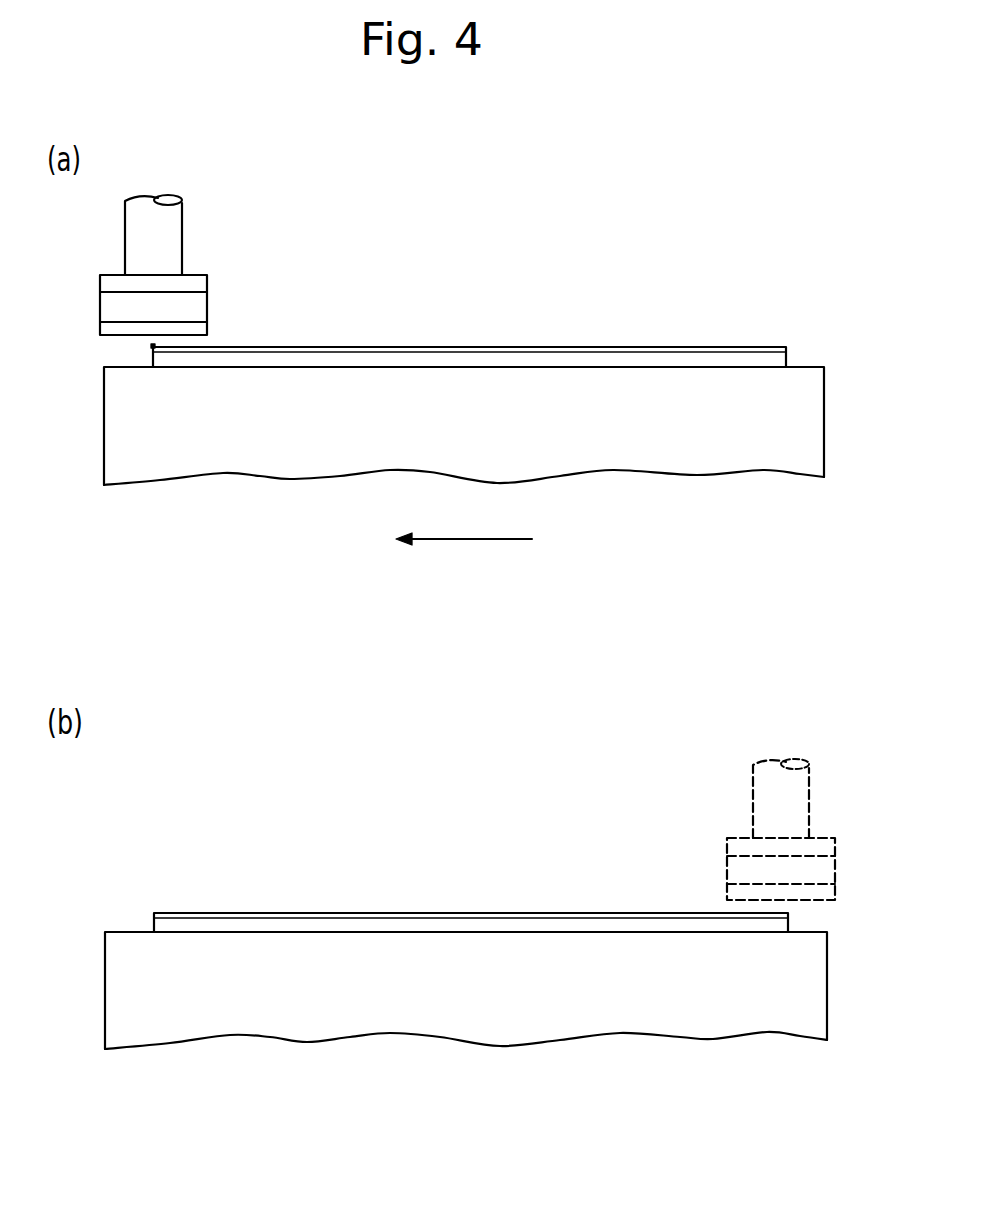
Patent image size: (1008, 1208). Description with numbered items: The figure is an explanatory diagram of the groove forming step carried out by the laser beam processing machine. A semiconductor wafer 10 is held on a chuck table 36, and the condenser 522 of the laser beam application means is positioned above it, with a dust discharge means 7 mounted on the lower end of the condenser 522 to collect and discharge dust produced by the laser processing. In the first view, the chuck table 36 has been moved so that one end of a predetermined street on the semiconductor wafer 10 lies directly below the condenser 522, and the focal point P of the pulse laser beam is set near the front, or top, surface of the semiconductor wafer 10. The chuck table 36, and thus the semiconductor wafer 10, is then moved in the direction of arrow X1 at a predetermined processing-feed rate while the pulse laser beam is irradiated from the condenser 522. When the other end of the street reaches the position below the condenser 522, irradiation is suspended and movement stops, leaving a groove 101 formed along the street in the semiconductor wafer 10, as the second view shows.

The dust discharge means 7 is at (100, 285).
The semiconductor wafer 10 is at (618, 348).
The chuck table 36 is at (805, 423).
The groove 101 is at (240, 913).
The condenser 522 is at (175, 217).
The focal point P is at (151, 346).
The direction of movement (arrow) X1 is at (448, 537).